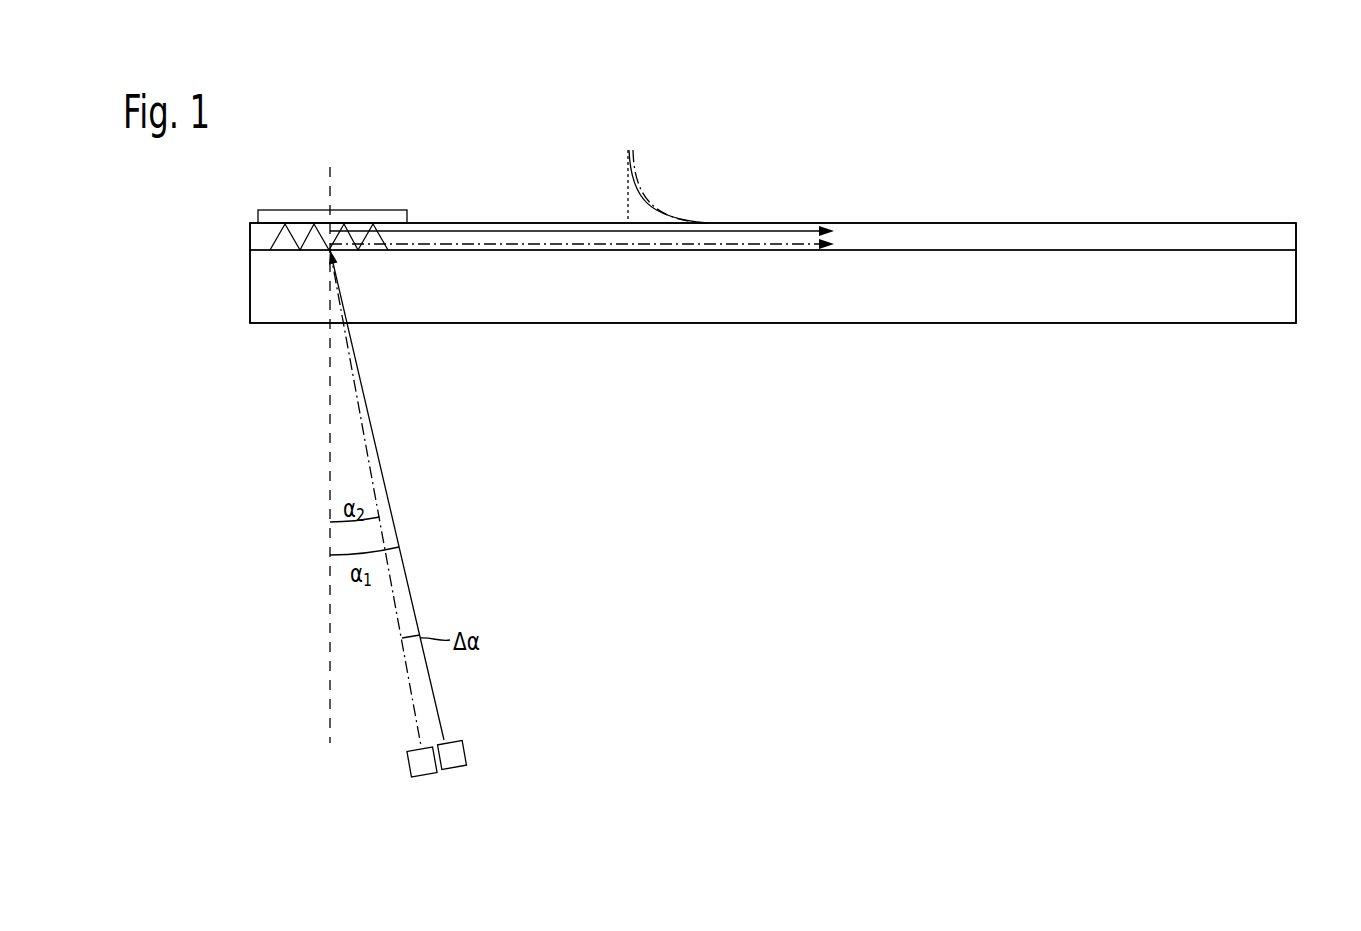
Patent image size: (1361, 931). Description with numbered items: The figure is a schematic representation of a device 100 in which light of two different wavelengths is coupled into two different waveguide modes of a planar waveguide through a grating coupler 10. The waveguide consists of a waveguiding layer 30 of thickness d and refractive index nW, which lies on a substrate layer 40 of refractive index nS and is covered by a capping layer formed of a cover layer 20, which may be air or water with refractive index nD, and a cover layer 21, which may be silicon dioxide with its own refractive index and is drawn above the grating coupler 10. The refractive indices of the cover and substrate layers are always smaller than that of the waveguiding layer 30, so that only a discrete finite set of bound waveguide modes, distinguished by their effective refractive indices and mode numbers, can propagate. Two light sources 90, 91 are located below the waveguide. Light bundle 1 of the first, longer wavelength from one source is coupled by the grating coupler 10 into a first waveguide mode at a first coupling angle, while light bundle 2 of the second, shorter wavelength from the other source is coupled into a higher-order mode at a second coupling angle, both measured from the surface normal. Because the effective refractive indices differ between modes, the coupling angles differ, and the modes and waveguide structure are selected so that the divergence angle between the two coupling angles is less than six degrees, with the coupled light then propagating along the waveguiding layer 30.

The device 100 is at (897, 135).
The cover layer 20 is at (1096, 196).
The cover layer 21 is at (383, 210).
The grating coupler 10 is at (246, 238).
The waveguiding layer 30 is at (1285, 237).
The substrate layer 40 is at (1285, 287).
The light bundle 1 is at (437, 705).
The light bundle 2 is at (418, 712).
The light source 90 is at (455, 772).
The light source 91 is at (423, 778).